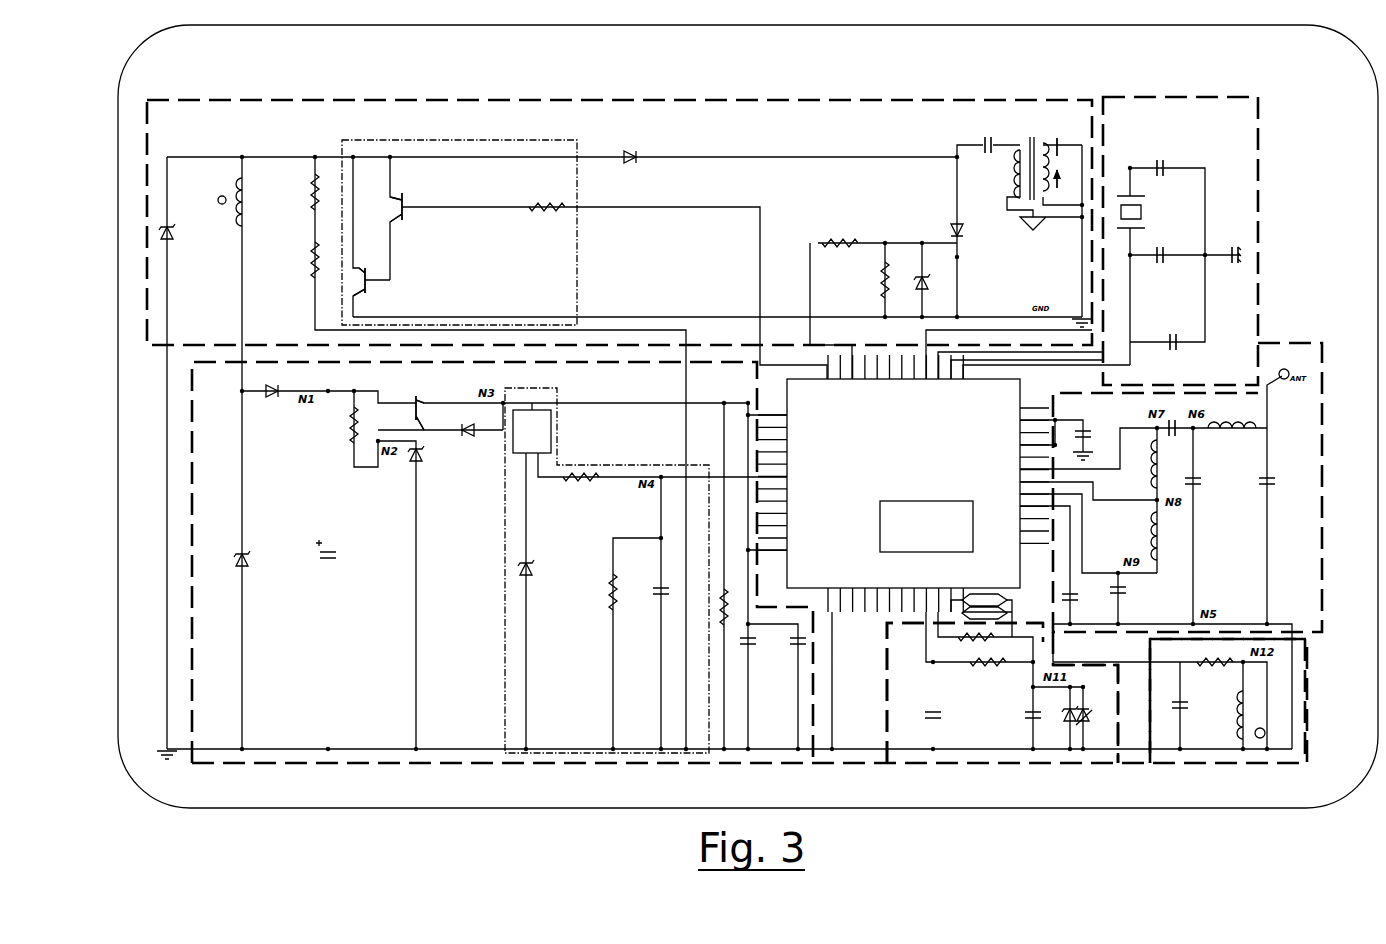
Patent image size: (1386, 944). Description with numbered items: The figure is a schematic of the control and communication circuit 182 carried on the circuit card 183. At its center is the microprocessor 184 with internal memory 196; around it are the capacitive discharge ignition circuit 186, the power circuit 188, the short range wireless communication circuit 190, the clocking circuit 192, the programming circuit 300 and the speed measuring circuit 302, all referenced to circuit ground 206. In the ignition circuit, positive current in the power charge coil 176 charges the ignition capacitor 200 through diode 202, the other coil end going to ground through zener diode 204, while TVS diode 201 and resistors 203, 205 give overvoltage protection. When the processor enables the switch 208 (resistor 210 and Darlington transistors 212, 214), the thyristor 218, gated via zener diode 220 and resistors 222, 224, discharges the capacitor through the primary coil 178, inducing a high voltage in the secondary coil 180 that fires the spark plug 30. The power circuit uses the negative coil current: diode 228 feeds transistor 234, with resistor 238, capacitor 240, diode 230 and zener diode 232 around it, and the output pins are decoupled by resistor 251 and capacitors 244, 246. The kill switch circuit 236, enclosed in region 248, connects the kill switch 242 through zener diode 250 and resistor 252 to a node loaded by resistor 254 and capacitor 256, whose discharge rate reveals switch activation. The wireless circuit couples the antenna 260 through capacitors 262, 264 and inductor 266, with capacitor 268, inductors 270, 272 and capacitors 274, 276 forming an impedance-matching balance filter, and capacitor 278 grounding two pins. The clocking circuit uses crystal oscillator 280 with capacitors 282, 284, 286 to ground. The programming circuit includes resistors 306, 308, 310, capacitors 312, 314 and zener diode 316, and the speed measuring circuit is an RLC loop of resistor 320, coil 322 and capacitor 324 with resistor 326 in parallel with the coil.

The spark plug 30 is at (1052, 172).
The power charge coil 176 is at (245, 222).
The primary coil 178 is at (1014, 176).
The secondary coil 180 is at (1047, 133).
The control and communication circuit 182 is at (645, 820).
The circuit card 183 is at (555, 808).
The microprocessor 184 is at (903, 483).
The capacitive discharge ignition circuit 186 is at (393, 98).
The power circuit 188 is at (208, 358).
The short range wireless communication circuit 190 is at (1324, 642).
The clocking circuit 192 is at (1218, 96).
The memory 196 is at (926, 526).
The ignition capacitor 200 is at (983, 137).
The TVS diode 201 is at (174, 237).
The diode 202 is at (638, 153).
The resistor 203 is at (314, 176).
The zener diode 204 is at (246, 567).
The resistor 205 is at (314, 268).
The circuit ground 206 is at (168, 745).
The switch 208 is at (580, 246).
The resistor 210 is at (548, 204).
The NPN transistor 212 is at (404, 196).
The NPN transistor 214 is at (376, 272).
The thyristor 218 is at (965, 245).
The zener diode 220 is at (930, 285).
The resistor 222 is at (843, 240).
The resistor 224 is at (883, 282).
The diode 228 is at (278, 388).
The diode 230 is at (472, 437).
The zener diode 232 is at (420, 465).
The NPN transistor 234 is at (417, 398).
The kill switch circuit 236 is at (555, 432).
The resistor 238 is at (350, 426).
The capacitor 240 is at (336, 560).
The kill switch 242 is at (532, 431).
The capacitor 244 is at (751, 650).
The capacitor 246 is at (803, 650).
The voltage regulator circuit 248 is at (508, 636).
The zener diode 250 is at (533, 572).
The resistor 251 is at (718, 608).
The resistor 252 is at (592, 482).
The resistor 254 is at (610, 605).
The capacitor 256 is at (666, 586).
The short range wireless antenna 260 is at (1286, 366).
The capacitor 262 is at (1271, 490).
The capacitor 264 is at (1077, 600).
The inductor 266 is at (1230, 438).
The capacitor 268 is at (1178, 440).
The inductor 270 is at (1153, 462).
The inductor 272 is at (1153, 542).
The capacitor 274 is at (1125, 593).
The capacitor 276 is at (1198, 488).
The capacitor 278 is at (1087, 428).
The crystal oscillator 280 is at (1146, 212).
The capacitor 282 is at (1168, 250).
The capacitor 284 is at (1176, 350).
The capacitor 286 is at (1170, 162).
The programming circuit 300 is at (1040, 767).
The speed measuring circuit 302 is at (1262, 770).
The resistor 306 is at (993, 668).
The resistor 308 is at (985, 632).
The resistor 310 is at (1092, 705).
The capacitor 312 is at (936, 722).
The capacitor 314 is at (1030, 715).
The zener diode 316 is at (1074, 724).
The resistor 320 is at (1218, 668).
The coil 322 is at (1250, 705).
The capacitor 324 is at (1184, 715).
The resistor 326 is at (1266, 733).